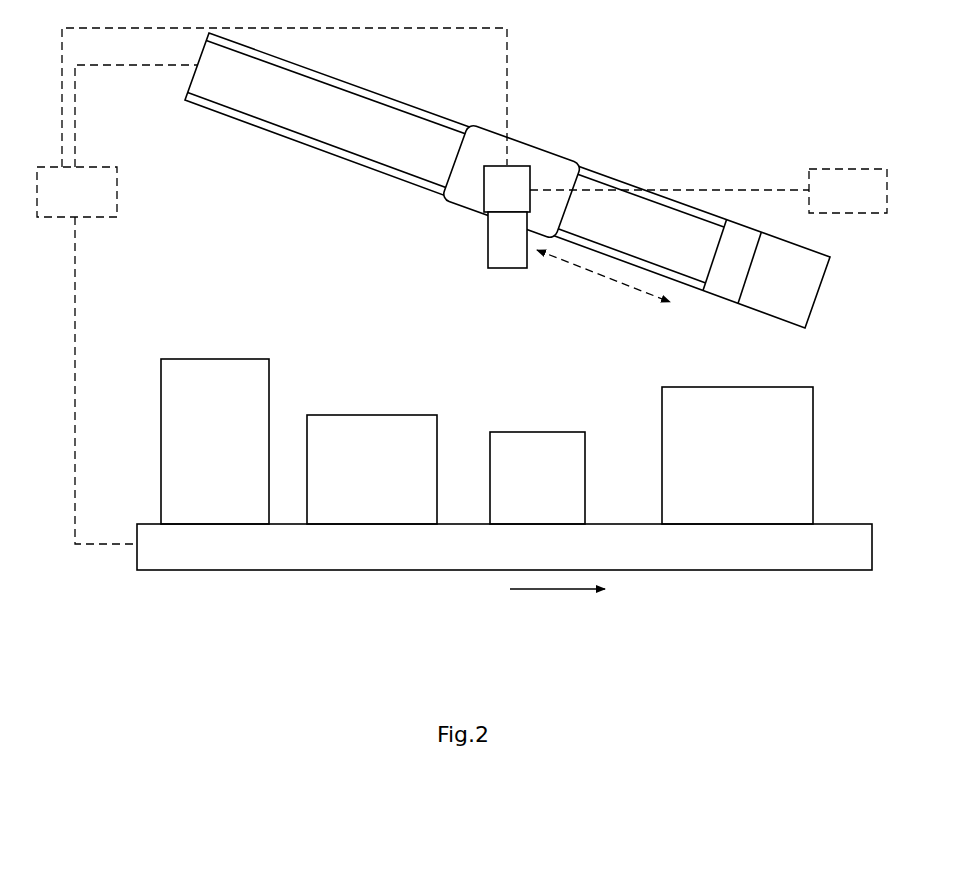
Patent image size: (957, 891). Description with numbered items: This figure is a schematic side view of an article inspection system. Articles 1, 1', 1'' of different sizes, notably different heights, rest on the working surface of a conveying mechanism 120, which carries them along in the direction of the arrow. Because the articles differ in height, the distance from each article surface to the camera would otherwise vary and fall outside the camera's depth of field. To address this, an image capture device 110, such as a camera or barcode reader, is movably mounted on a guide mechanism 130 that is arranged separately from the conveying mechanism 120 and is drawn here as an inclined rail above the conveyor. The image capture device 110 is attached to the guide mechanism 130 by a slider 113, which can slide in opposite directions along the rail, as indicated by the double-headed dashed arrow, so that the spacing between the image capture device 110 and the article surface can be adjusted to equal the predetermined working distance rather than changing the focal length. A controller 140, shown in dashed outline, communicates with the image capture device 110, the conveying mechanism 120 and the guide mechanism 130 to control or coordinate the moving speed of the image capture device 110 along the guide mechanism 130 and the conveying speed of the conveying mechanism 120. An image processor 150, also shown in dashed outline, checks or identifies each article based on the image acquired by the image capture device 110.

The article 1 is at (215, 441).
The article 1' is at (372, 469).
The article 1'' is at (537, 478).
The image capture device 110 is at (482, 243).
The slider 113 is at (518, 153).
The conveying mechanism 120 is at (738, 543).
The guide mechanism 130 is at (240, 98).
The controller 140 is at (272, 286).
The image processor 150 is at (708, 191).